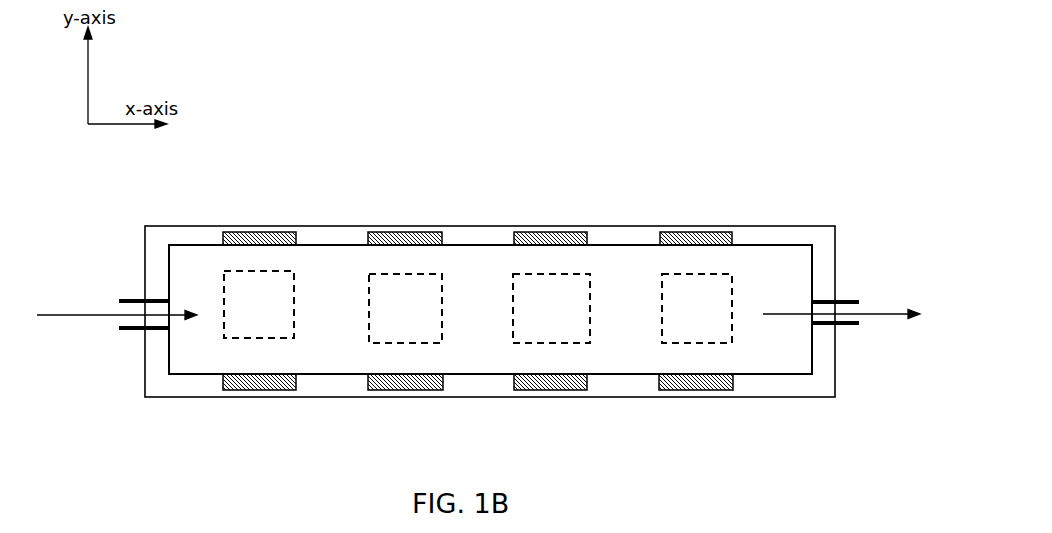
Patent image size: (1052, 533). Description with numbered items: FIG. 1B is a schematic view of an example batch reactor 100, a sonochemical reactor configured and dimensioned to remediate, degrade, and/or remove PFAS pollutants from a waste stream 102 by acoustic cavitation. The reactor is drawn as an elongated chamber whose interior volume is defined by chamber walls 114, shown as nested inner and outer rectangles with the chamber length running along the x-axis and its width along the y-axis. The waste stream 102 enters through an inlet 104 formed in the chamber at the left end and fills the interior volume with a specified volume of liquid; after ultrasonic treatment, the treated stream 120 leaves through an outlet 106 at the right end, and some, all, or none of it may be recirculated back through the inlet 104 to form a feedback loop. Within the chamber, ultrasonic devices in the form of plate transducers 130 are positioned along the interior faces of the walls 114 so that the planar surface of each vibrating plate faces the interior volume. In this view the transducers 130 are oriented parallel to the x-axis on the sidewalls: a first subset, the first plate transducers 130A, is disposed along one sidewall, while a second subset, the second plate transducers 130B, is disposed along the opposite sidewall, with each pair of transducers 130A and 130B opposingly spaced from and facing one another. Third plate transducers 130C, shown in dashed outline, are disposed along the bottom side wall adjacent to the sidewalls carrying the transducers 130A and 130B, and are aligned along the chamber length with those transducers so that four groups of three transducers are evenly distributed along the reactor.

The batch reactor 100 is at (755, 138).
The waste stream 102 is at (63, 312).
The inlet 104 is at (124, 300).
The outlet 106 is at (853, 299).
The chamber walls 114 is at (197, 237).
The treated stream 120 is at (877, 317).
The plate transducers 130 is at (506, 305).
The first plate transducer 130A is at (260, 232).
The second plate transducer 130B is at (268, 386).
The third plate transducer 130C is at (295, 289).